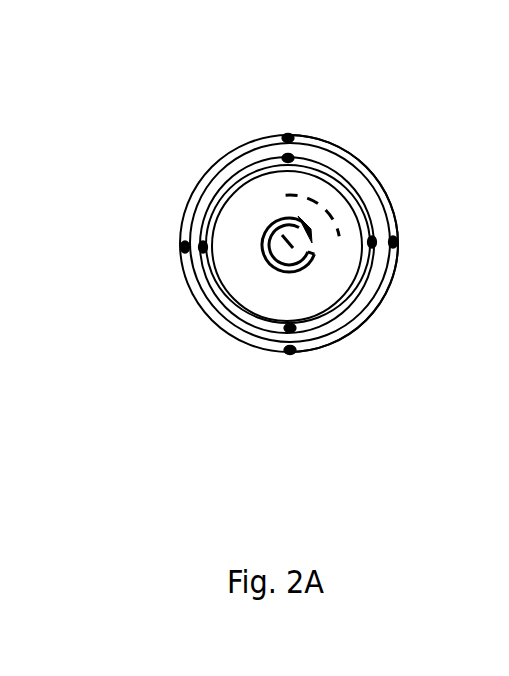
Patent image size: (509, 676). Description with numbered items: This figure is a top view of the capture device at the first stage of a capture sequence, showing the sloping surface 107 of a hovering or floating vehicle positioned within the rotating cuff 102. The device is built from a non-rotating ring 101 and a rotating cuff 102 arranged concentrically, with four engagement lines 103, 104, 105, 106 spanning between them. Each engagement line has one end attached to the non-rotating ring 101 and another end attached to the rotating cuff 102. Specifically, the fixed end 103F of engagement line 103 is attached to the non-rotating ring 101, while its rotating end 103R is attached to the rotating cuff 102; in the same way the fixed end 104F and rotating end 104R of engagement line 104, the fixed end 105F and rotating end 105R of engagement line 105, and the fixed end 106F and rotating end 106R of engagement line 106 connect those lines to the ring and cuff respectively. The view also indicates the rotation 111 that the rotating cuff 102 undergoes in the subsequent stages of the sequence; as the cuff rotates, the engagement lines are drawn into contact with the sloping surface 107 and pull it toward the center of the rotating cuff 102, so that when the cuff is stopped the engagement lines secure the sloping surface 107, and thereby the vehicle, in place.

The non-rotating ring 101 is at (237, 152).
The rotating cuff 102 is at (335, 165).
The engagement line 103 is at (223, 300).
The end 103F is at (286, 352).
The end 103R is at (203, 247).
The engagement line 104 is at (212, 182).
The end 104F is at (185, 248).
The end 104R is at (288, 158).
The engagement line 105 is at (352, 332).
The end 105F is at (393, 242).
The end 105R is at (293, 330).
The engagement line 106 is at (358, 165).
The end 106F is at (288, 138).
The end 106R is at (372, 243).
The sloping surface 107 is at (337, 250).
The rotation 111 is at (274, 268).